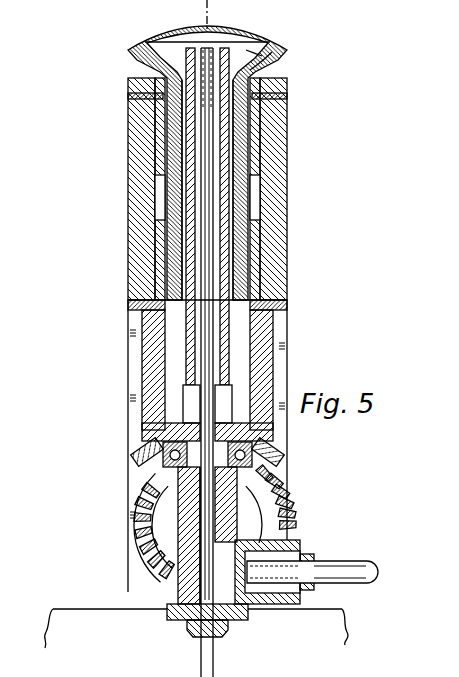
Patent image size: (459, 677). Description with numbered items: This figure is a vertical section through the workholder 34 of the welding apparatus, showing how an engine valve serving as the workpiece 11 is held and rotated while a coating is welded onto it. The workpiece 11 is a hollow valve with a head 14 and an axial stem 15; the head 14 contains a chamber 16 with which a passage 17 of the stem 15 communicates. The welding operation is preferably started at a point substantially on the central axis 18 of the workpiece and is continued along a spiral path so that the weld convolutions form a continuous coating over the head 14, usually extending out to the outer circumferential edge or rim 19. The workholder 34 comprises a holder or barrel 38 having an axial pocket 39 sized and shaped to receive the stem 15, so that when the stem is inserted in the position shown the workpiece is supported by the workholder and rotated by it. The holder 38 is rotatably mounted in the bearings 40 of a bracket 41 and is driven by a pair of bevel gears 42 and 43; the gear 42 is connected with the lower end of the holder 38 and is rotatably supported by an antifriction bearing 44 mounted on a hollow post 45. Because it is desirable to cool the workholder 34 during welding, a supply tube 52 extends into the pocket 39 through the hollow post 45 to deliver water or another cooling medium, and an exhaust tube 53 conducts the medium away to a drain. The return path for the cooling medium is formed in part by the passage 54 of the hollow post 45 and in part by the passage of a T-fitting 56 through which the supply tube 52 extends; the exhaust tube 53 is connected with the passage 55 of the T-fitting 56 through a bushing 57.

The workpiece 11 is at (127, 44).
The head 14 is at (256, 27).
The axial stem 15 is at (226, 252).
The chamber 16 is at (262, 56).
The passage 17 is at (218, 273).
The central axis 18 is at (209, 22).
The outer circumferential edge or rim 19 is at (276, 55).
The workholder 34 is at (126, 83).
The holder or barrel 38 is at (160, 197).
The axial pocket 39 is at (178, 255).
The bearings 40 is at (301, 176).
The bracket 41 is at (283, 327).
The bevel gear 42 is at (275, 458).
The bevel gear 43 is at (275, 487).
The antifriction bearing 44 is at (160, 458).
The hollow post 45 is at (145, 487).
The supply tube 52 is at (188, 402).
The exhaust tube 53 is at (366, 553).
The passage 54 is at (282, 508).
The passage 55 is at (167, 585).
The T-fitting 56 is at (173, 600).
The bushing 57 is at (298, 548).